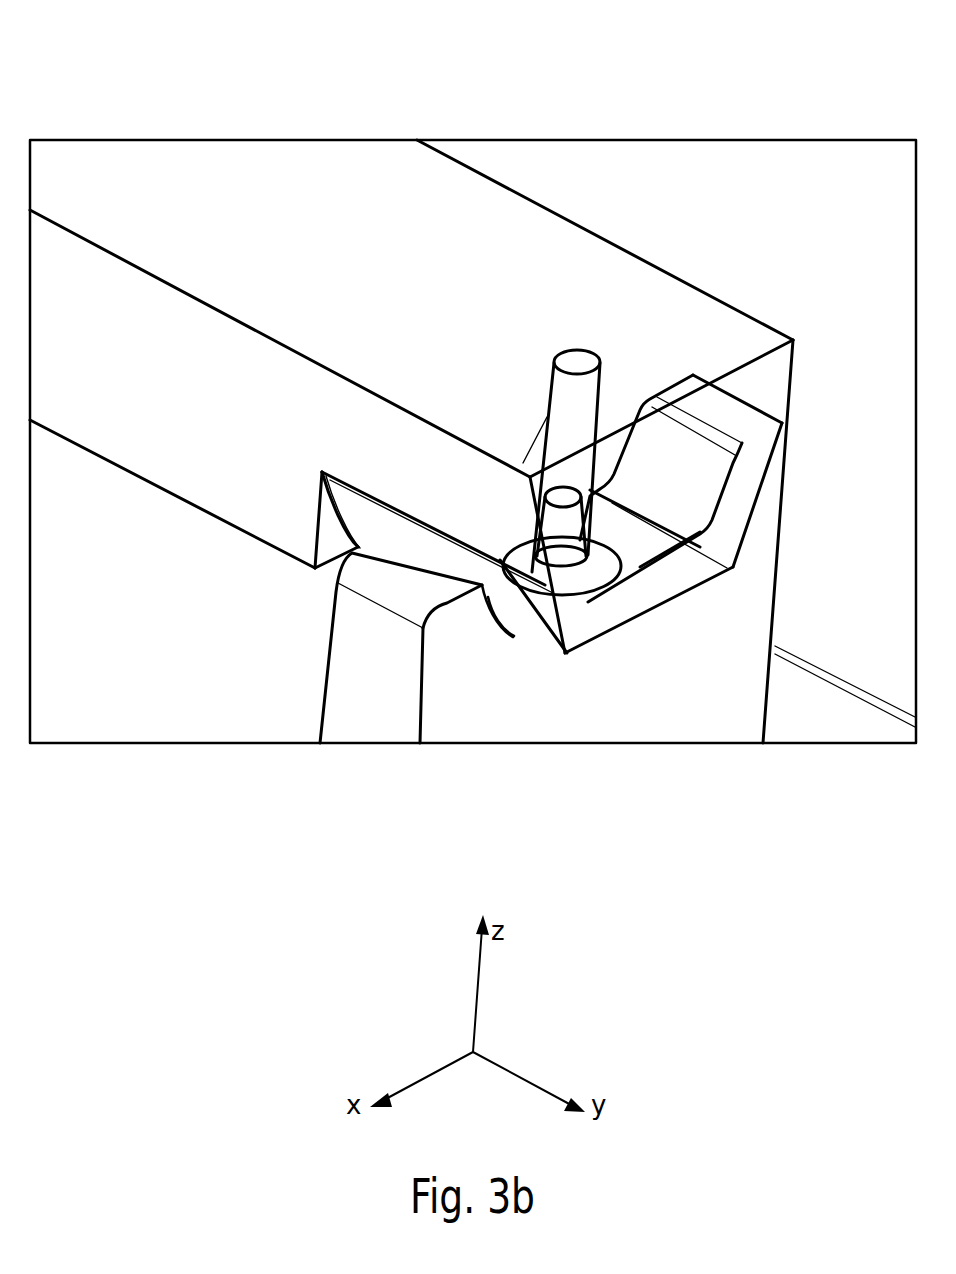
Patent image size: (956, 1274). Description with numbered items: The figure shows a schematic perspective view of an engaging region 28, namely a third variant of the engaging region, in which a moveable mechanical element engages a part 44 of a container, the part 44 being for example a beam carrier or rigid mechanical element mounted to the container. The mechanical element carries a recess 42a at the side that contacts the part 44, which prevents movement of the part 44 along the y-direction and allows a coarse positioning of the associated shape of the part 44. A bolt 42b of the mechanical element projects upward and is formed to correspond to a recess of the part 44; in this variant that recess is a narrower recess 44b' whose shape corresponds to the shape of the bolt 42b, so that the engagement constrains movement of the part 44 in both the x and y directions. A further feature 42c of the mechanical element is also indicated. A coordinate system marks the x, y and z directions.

The engaging region 28 is at (907, 53).
The part of the container 44 is at (735, 327).
The narrower recess 44b' is at (614, 325).
The recess 42a is at (521, 648).
The bolt 42b is at (573, 535).
The edge of the first connecting part 42c is at (560, 600).